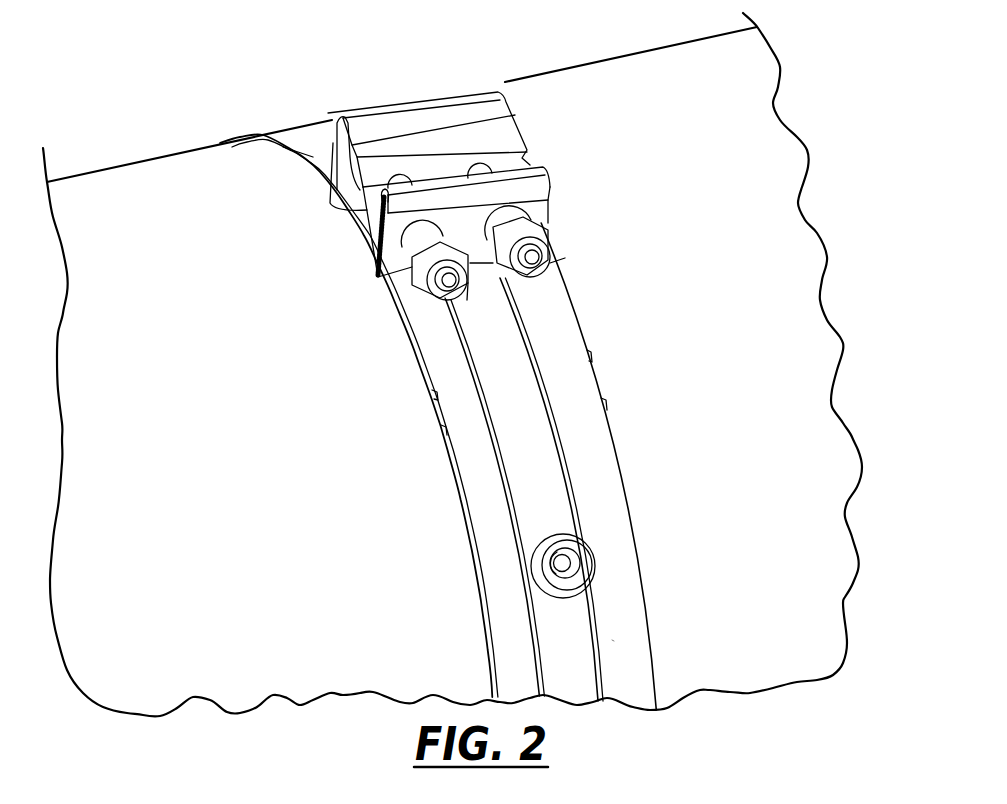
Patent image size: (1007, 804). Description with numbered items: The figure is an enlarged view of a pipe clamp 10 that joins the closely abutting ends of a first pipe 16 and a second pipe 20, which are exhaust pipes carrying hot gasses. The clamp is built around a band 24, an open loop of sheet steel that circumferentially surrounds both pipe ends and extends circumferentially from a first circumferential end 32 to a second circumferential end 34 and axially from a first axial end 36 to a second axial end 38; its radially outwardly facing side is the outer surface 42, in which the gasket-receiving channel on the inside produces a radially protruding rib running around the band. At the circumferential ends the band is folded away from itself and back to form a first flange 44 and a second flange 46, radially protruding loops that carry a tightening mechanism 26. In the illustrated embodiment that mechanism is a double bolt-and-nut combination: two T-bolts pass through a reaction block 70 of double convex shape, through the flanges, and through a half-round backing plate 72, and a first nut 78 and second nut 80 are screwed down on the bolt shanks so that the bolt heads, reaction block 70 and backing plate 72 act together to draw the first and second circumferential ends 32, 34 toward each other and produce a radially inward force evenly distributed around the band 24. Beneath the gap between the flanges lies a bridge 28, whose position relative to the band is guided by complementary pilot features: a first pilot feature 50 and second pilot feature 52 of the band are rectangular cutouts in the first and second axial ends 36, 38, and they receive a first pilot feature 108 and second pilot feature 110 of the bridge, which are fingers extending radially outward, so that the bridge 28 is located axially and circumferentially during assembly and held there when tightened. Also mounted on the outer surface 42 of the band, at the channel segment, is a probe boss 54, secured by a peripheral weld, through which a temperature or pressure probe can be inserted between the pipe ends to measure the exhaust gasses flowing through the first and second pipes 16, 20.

The pipe clamp 10 is at (583, 466).
The first pipe 16 is at (655, 82).
The second pipe 20 is at (140, 188).
The band 24 is at (583, 466).
The tightening mechanism 26 is at (445, 185).
The bridge 28 is at (354, 415).
The first circumferential end 32 is at (543, 287).
The second circumferential end 34 is at (288, 147).
The first axial end 36 is at (640, 580).
The second axial end 38 is at (490, 658).
The outer surface 42 is at (625, 626).
The first flange 44 is at (540, 162).
The second flange 46 is at (437, 103).
The first pilot feature 50 is at (594, 385).
The second pilot feature 52 is at (440, 423).
The probe boss 54 is at (594, 546).
The reaction block 70 is at (332, 172).
The backing plate 72 is at (406, 229).
The first nut 78 is at (527, 212).
The second nut 80 is at (412, 258).
The first pilot feature 108 is at (592, 358).
The second pilot feature 110 is at (440, 393).